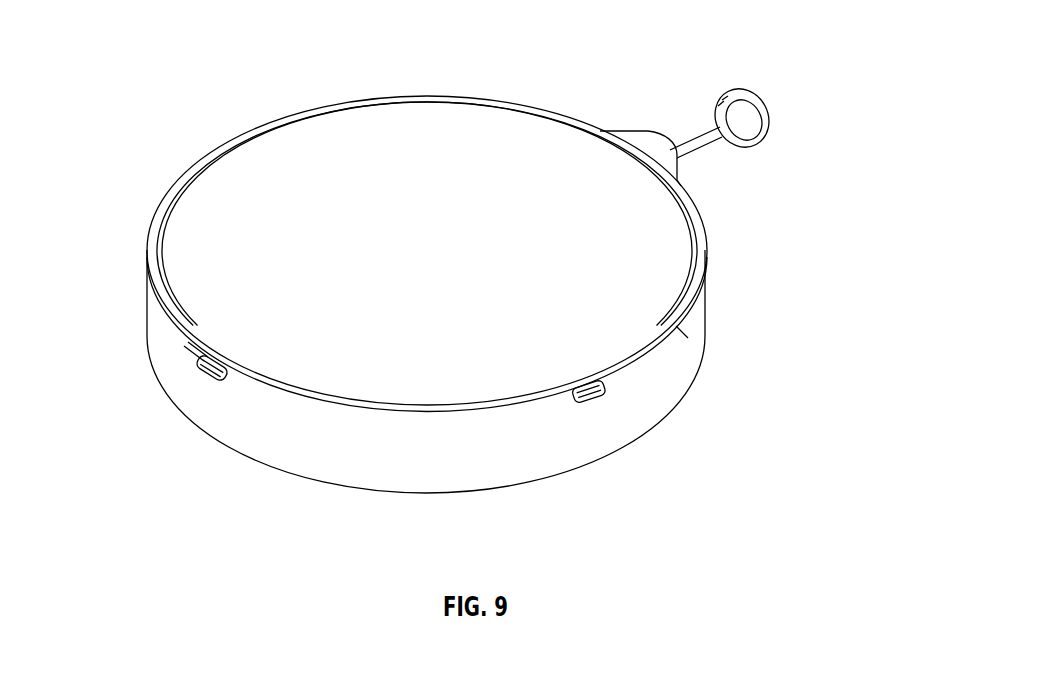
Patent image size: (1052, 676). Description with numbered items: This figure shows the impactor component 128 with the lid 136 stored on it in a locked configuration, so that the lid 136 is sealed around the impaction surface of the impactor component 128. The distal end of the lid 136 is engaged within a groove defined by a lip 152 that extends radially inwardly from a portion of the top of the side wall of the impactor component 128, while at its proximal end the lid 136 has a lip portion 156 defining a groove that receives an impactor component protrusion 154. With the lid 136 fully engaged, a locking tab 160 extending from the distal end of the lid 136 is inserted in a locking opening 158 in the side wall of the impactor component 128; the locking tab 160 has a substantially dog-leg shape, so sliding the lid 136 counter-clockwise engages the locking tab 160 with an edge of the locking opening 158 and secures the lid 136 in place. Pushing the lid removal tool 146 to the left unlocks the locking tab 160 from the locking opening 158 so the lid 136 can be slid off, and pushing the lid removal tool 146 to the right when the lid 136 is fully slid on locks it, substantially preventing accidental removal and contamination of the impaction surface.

The impactor component 128 is at (231, 420).
The lid 136 is at (660, 262).
The lid removal tool 146 is at (765, 98).
The lip 152 is at (200, 162).
The impactor component protrusion 154 is at (593, 395).
The lip portion 156 is at (680, 333).
The locking opening 158 is at (193, 363).
The locking tab 160 is at (193, 362).